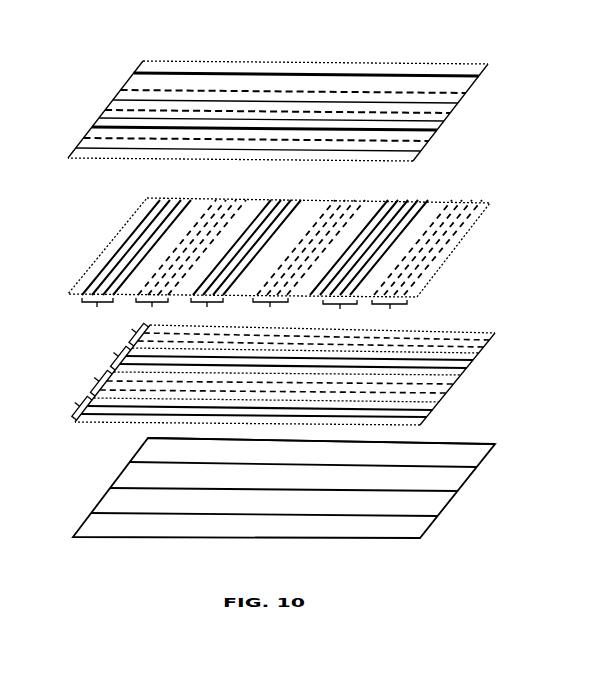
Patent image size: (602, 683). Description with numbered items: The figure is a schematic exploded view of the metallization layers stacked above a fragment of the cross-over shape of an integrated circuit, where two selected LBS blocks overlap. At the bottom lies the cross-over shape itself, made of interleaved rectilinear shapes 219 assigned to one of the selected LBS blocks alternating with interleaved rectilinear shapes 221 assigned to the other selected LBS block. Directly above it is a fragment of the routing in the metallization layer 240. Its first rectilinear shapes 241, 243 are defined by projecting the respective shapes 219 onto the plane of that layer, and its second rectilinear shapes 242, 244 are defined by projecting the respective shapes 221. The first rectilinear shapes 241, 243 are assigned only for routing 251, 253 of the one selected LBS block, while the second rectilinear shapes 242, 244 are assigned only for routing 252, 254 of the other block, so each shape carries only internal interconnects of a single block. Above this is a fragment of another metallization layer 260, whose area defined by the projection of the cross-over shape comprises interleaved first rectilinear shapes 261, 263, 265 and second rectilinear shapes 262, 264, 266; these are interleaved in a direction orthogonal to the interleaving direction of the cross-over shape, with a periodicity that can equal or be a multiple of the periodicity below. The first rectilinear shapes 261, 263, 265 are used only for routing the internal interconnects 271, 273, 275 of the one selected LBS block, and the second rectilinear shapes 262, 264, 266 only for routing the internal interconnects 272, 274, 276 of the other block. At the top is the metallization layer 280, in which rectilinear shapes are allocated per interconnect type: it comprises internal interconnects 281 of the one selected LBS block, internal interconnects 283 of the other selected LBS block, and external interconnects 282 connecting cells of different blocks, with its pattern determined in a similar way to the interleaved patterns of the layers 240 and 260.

The metallization layer 280 is at (327, 98).
The internal interconnects 281 is at (420, 153).
The external interconnects 282 is at (440, 131).
The internal interconnects 283 is at (453, 112).
The metallization layer 260 is at (328, 244).
The first rectilinear shape 261 is at (158, 199).
The second rectilinear shape 262 is at (212, 199).
The first rectilinear shape 263 is at (266, 199).
The second rectilinear shape 264 is at (326, 199).
The first rectilinear shape 265 is at (391, 199).
The second rectilinear shape 266 is at (454, 199).
The internal interconnects 271 is at (97, 310).
The internal interconnects 272 is at (152, 310).
The internal interconnects 273 is at (207, 310).
The internal interconnects 274 is at (270, 310).
The internal interconnects 275 is at (339, 311).
The internal interconnects 276 is at (389, 311).
The metallization layer 240 is at (313, 360).
The first rectilinear shape 241 is at (421, 423).
The second rectilinear shape 242 is at (457, 397).
The first rectilinear shape 243 is at (473, 370).
The second rectilinear shape 244 is at (494, 334).
The routing 251 is at (68, 405).
The routing 252 is at (86, 381).
The routing 253 is at (104, 356).
The routing 254 is at (127, 334).
The interleaved rectilinear shapes 219 is at (475, 477).
The interleaved rectilinear shapes 221 is at (492, 452).